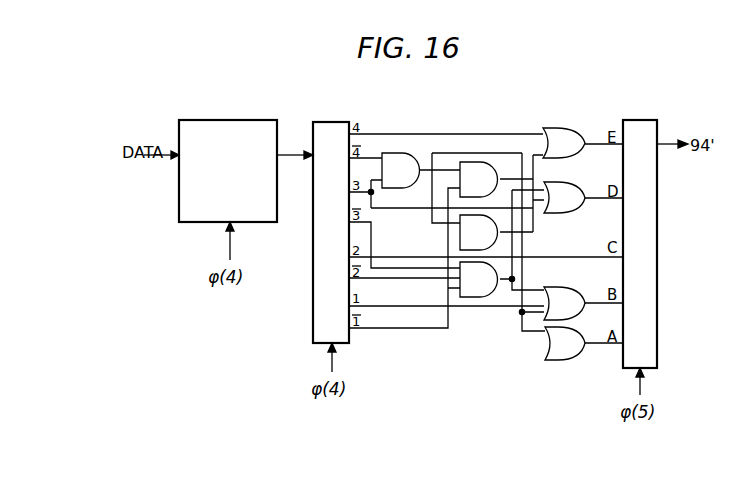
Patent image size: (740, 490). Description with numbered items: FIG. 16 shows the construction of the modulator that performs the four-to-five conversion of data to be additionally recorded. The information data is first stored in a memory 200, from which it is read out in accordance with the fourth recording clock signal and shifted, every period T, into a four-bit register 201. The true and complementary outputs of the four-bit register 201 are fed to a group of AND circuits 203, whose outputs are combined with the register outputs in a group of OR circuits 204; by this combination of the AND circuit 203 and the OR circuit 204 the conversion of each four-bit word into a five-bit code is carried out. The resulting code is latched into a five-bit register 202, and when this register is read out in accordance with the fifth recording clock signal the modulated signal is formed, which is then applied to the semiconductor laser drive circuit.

The memory 200 is at (227, 121).
The 4-bit register 201 is at (322, 122).
The 5-bit register 202 is at (640, 120).
The AND circuit 203 is at (407, 152).
The OR circuit 204 is at (567, 128).